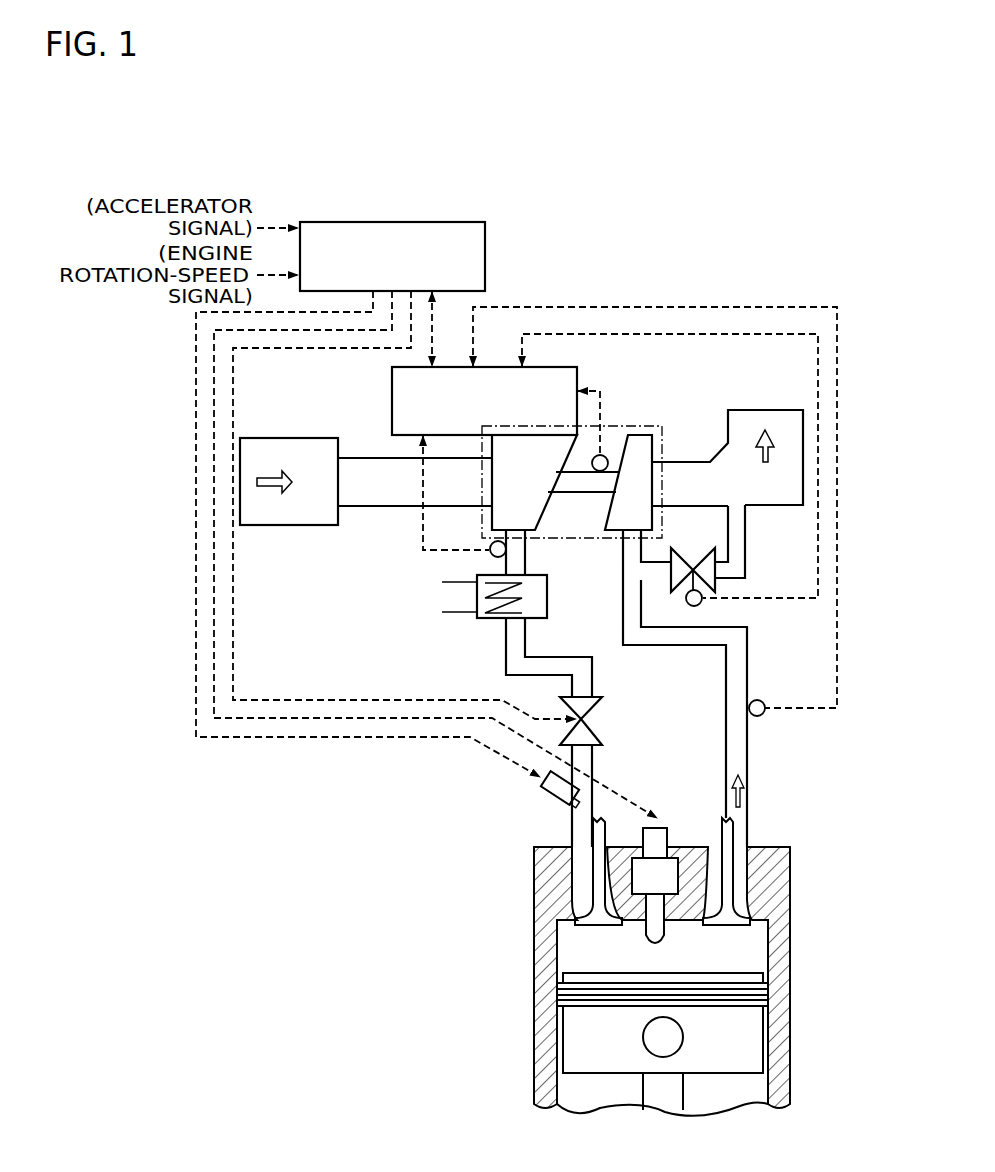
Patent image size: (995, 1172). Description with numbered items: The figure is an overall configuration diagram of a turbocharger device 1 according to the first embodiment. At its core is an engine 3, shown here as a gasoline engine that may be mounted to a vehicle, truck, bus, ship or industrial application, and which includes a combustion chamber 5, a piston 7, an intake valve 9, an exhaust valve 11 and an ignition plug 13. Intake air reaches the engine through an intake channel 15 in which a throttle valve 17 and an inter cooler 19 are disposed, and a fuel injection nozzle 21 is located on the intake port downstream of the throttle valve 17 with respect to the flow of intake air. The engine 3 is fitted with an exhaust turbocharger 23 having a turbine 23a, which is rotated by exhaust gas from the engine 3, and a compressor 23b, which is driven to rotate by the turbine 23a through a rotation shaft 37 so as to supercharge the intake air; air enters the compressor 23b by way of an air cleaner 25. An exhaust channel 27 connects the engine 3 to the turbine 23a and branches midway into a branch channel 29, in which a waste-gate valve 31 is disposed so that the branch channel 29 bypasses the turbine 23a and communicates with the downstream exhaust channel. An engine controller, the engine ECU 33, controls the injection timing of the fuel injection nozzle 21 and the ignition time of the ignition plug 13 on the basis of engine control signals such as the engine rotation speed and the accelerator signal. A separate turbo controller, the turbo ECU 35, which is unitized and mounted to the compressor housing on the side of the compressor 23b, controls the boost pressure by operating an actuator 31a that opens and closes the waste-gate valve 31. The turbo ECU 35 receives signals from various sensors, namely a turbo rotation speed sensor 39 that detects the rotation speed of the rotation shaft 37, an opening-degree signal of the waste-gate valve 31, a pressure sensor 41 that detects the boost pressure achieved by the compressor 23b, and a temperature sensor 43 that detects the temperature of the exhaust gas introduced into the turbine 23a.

The turbocharger device 1 is at (650, 208).
The engine 3 is at (810, 810).
The combustion chamber 5 is at (748, 948).
The piston 7 is at (748, 1055).
The intake valve 9 is at (594, 822).
The exhaust valve 11 is at (731, 832).
The ignition plug 13 is at (668, 828).
The intake channel 15 is at (506, 646).
The throttle valve 17 is at (600, 706).
The inter cooler 19 is at (547, 605).
The fuel injection nozzle 21 is at (553, 807).
The exhaust turbocharger 23 is at (653, 423).
The turbine 23a is at (652, 446).
The compressor 23b is at (492, 512).
The air cleaner 25 is at (283, 438).
The exhaust channel 27 is at (690, 648).
The branch channel 29 is at (745, 543).
The waste-gate valve 31 is at (682, 562).
The actuator 31a is at (703, 604).
The engine controller (engine ECU) 33 is at (444, 222).
The turbo controller (turbo ECU) 35 is at (392, 395).
The rotation shaft 37 is at (577, 497).
The turbo rotation speed sensor 39 is at (608, 457).
The pressure sensor 41 is at (489, 553).
The temperature sensor 43 is at (764, 702).